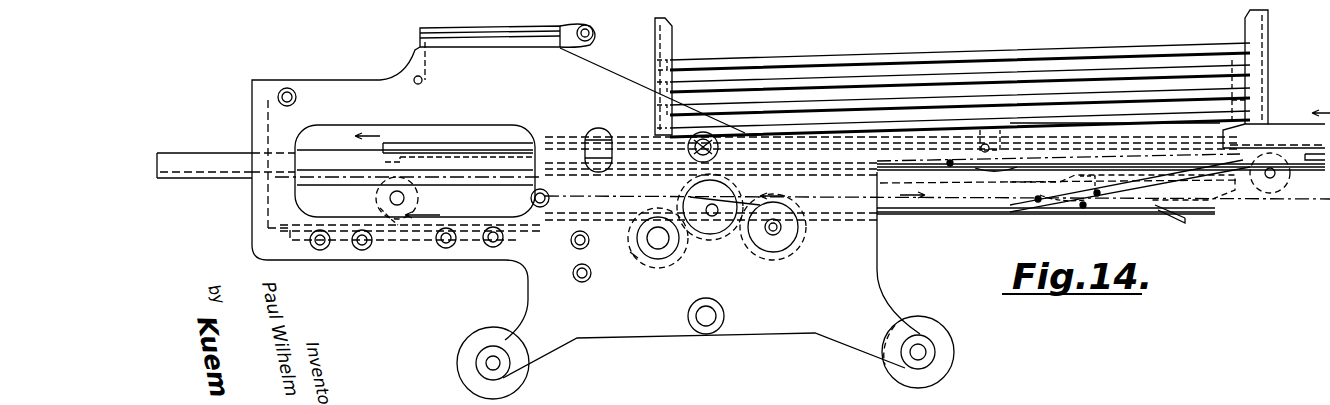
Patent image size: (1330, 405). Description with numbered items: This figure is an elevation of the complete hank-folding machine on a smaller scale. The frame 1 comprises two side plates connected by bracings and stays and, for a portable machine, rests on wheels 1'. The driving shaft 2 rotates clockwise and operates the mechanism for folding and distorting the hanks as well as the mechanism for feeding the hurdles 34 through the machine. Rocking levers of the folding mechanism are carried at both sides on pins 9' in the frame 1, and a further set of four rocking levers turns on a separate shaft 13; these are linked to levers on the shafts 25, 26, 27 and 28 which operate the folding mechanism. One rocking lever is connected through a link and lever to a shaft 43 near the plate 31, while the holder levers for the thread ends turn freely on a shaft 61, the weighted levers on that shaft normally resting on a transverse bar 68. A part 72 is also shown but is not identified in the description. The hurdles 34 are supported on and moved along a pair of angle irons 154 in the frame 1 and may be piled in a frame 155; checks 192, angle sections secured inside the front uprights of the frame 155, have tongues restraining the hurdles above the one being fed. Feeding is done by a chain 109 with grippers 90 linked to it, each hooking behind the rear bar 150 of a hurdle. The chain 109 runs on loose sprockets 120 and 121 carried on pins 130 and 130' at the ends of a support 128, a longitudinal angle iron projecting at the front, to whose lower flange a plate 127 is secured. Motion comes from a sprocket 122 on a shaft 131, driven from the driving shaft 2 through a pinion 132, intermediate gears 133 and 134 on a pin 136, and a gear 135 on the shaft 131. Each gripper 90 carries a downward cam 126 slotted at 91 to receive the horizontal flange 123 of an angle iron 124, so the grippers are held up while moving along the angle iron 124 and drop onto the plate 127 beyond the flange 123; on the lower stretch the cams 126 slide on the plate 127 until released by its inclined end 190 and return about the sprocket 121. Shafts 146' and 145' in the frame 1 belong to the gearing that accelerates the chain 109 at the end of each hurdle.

The frame 1 is at (586, 210).
The wheels 1' is at (717, 357).
The driving shaft 2 is at (656, 245).
The pins 9' is at (726, 94).
The shaft 13 is at (700, 330).
The shaft 25 is at (316, 250).
The shaft 26 is at (360, 250).
The shaft 27 is at (446, 250).
The shaft 28 is at (493, 248).
The plate 31 is at (515, 30).
The hurdles 34 is at (430, 150).
The shaft 43 is at (588, 25).
The shaft 61 is at (290, 90).
The transverse bar 68 is at (415, 77).
The pin 72 is at (580, 282).
The grippers 90 is at (428, 218).
The slot 91 is at (1098, 191).
The chain 109 is at (555, 208).
The sprocket 120 is at (388, 200).
The sprocket 121 is at (1288, 183).
The sprocket 122 is at (800, 233).
The horizontal flange 123 is at (1130, 172).
The angle iron 124 is at (1190, 180).
The cam 126 is at (1083, 207).
The plate 127 is at (1035, 202).
The support 128 is at (303, 197).
The pin 130 is at (380, 262).
The pin 130' is at (1255, 205).
The shaft 131 is at (775, 238).
The pinion 132 is at (668, 255).
The intermediate gear 133 is at (712, 240).
The intermediate gear 134 is at (722, 235).
The gear 135 is at (795, 250).
The pin 136 is at (690, 203).
The shaft 145' is at (558, 242).
The shaft 146' is at (550, 153).
The rear bar 150 is at (990, 130).
The angle irons 154 is at (208, 157).
The frame 155 is at (668, 46).
The inclined end 190 is at (1176, 216).
The checks 192 is at (655, 128).